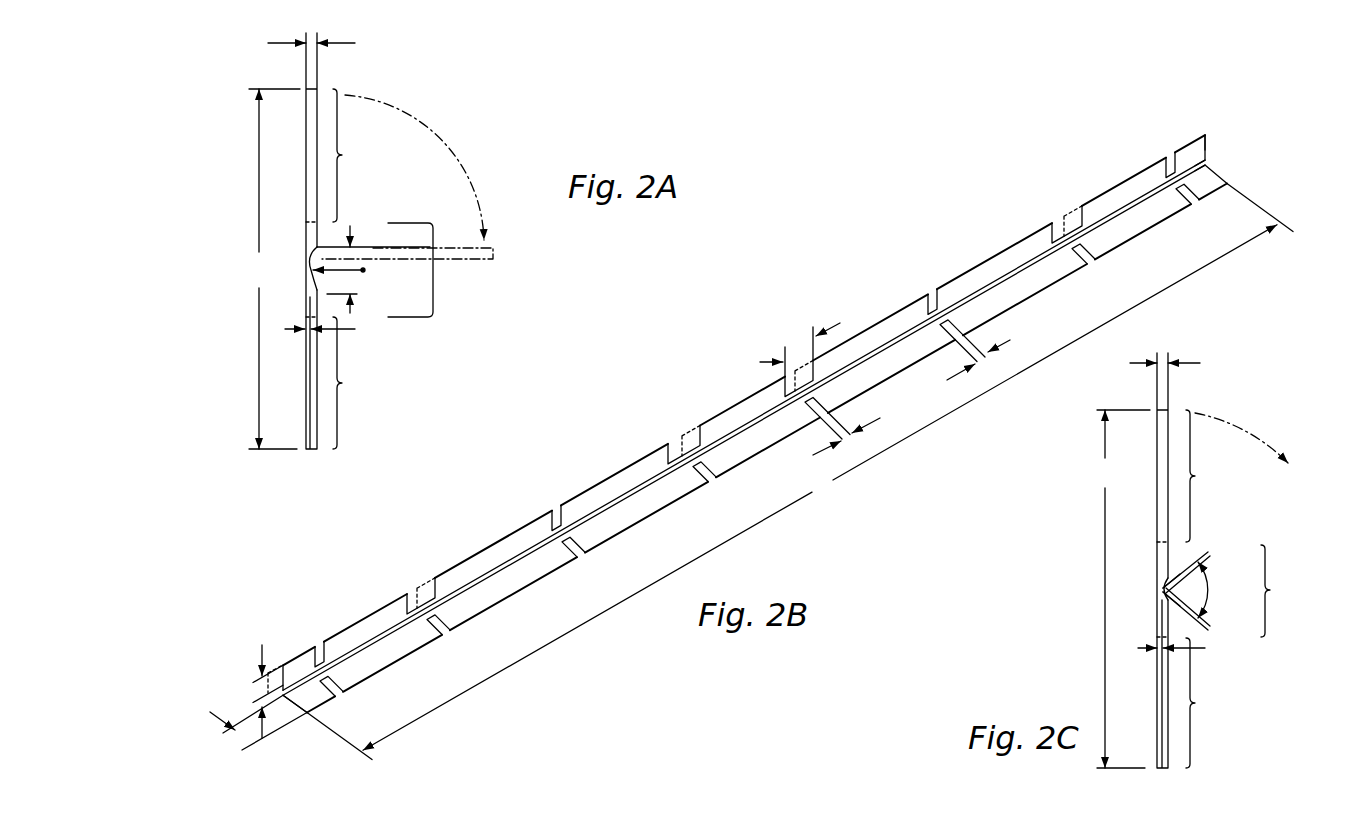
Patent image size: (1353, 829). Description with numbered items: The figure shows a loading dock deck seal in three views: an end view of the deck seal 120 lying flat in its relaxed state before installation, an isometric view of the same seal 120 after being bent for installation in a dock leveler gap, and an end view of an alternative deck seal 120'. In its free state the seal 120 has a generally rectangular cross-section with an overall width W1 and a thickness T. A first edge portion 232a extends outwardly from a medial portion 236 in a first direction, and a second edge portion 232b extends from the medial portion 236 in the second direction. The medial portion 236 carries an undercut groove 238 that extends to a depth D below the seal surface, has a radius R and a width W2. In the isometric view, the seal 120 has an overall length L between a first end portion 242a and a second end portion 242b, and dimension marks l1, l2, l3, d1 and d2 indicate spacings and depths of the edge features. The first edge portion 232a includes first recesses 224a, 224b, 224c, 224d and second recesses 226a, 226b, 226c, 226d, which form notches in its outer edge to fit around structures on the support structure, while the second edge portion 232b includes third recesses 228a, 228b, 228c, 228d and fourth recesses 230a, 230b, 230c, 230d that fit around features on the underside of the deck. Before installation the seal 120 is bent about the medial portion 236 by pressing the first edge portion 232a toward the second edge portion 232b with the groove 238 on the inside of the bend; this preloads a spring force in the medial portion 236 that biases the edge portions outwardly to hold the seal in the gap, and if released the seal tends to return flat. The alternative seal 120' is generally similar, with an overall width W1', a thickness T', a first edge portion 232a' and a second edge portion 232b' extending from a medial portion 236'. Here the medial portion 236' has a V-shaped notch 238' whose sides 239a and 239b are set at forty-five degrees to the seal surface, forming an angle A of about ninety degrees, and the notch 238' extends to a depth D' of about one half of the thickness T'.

In FIG. 2A, the deck seal 120 is at (408, 241).
In FIG. 2B, the deck seal 120 is at (755, 423).
In FIG. 2C, the deck seal 120' is at (1223, 560).
In FIG. 2B, the first recess 224a is at (1192, 201).
In FIG. 2B, the first recess 224b is at (943, 333).
In FIG. 2B, the first recess 224c is at (578, 557).
In FIG. 2B, the first recess 224d is at (338, 692).
In FIG. 2B, the second recess 226a is at (1082, 263).
In FIG. 2B, the second recess 226b is at (810, 413).
In FIG. 2B, the second recess 226c is at (710, 478).
In FIG. 2B, the second recess 226d is at (440, 626).
In FIG. 2B, the third recess 228a is at (1168, 163).
In FIG. 2B, the third recess 228b is at (930, 305).
In FIG. 2B, the third recess 228c is at (553, 515).
In FIG. 2B, the third recess 228d is at (320, 645).
In FIG. 2B, the fourth recess 230a is at (1070, 228).
In FIG. 2B, the fourth recess 230b is at (805, 386).
In FIG. 2B, the fourth recess 230c is at (690, 438).
In FIG. 2B, the fourth recess 230d is at (420, 590).
In FIG. 2A, the first edge portion 232a is at (369, 383).
In FIG. 2B, the first edge portion 232a is at (1255, 173).
In FIG. 2A, the second edge portion 232b is at (369, 155).
In FIG. 2B, the second edge portion 232b is at (1228, 127).
In FIG. 2C, the first edge portion 232a' is at (1221, 703).
In FIG. 2C, the second edge portion 232b' is at (1218, 476).
In FIG. 2A, the medial portion 236 is at (449, 270).
In FIG. 2B, the medial portion 236 is at (1245, 154).
In FIG. 2C, the medial portion 236' is at (1276, 610).
In FIG. 2A, the groove 238 is at (405, 242).
In FIG. 2B, the groove 238 is at (744, 427).
In FIG. 2C, the notch 238' is at (1216, 591).
In FIG. 2C, the notch side 239a is at (1172, 600).
In FIG. 2C, the notch side 239b is at (1172, 580).
In FIG. 2B, the first end portion 242a is at (1207, 150).
In FIG. 2B, the second end portion 242b is at (300, 712).
In FIG. 2A, the seal thickness T is at (304, 43).
In FIG. 2C, the seal thickness T' is at (1157, 363).
In FIG. 2A, the overall width W1 is at (273, 269).
In FIG. 2C, the overall width W1' is at (1121, 589).
In FIG. 2A, the groove width W2 is at (344, 259).
In FIG. 2A, the groove radius R is at (363, 270).
In FIG. 2A, the groove depth D is at (313, 329).
In FIG. 2C, the notch depth D' is at (1163, 648).
In FIG. 2B, the overall length L is at (800, 472).
In FIG. 2B, the notch spacing l1 is at (989, 355).
In FIG. 2B, the notch spacing l2 is at (856, 429).
In FIG. 2B, the tab spacing l3 is at (807, 345).
In FIG. 2B, the tab depth d1 is at (234, 715).
In FIG. 2B, the tab depth d2 is at (261, 649).
In FIG. 2C, the notch angle A is at (1208, 592).